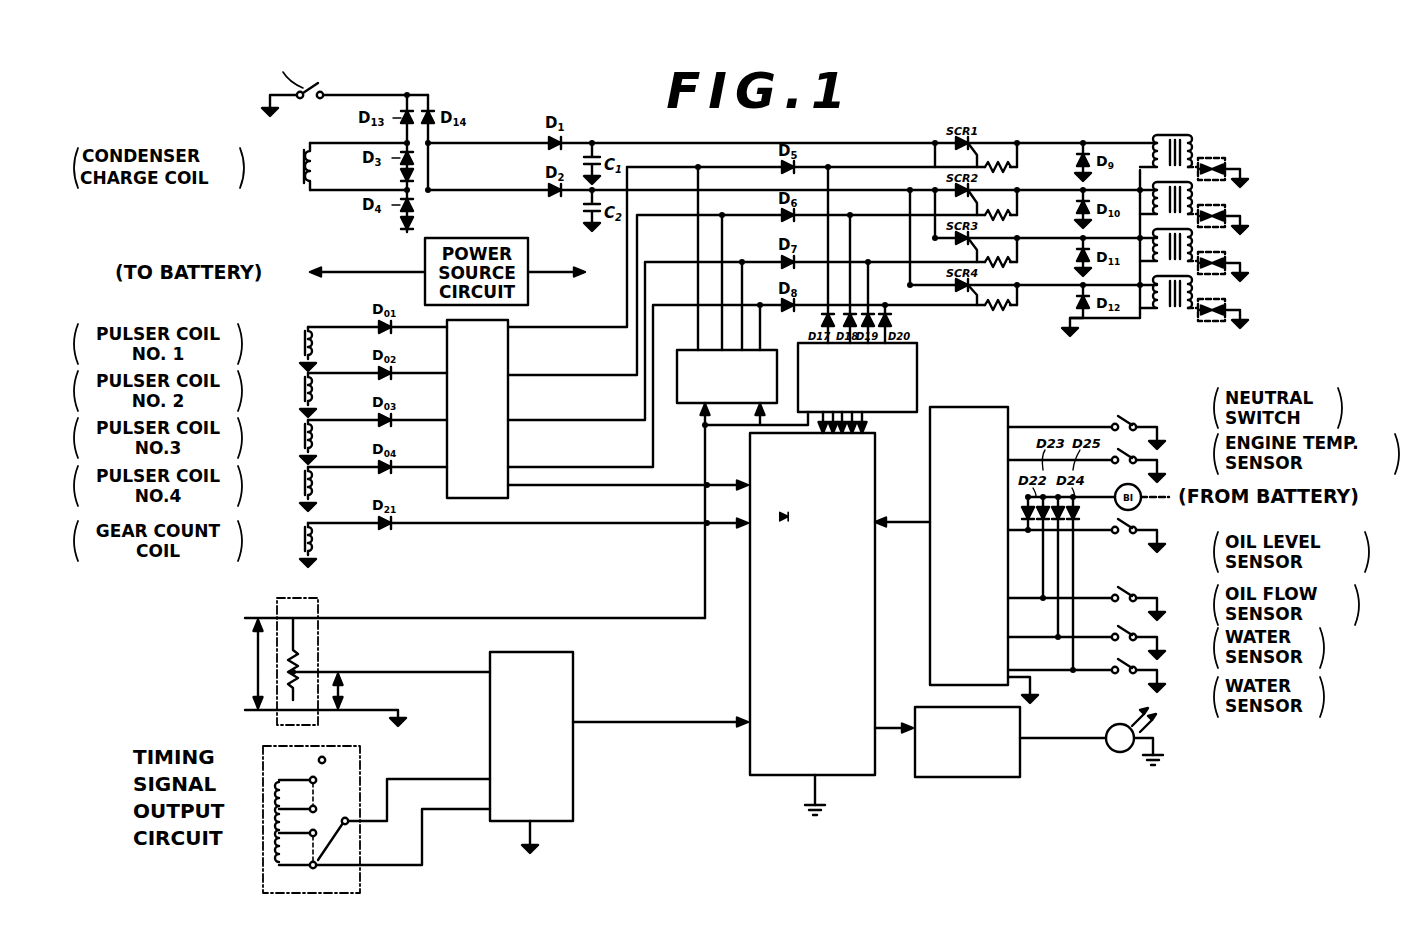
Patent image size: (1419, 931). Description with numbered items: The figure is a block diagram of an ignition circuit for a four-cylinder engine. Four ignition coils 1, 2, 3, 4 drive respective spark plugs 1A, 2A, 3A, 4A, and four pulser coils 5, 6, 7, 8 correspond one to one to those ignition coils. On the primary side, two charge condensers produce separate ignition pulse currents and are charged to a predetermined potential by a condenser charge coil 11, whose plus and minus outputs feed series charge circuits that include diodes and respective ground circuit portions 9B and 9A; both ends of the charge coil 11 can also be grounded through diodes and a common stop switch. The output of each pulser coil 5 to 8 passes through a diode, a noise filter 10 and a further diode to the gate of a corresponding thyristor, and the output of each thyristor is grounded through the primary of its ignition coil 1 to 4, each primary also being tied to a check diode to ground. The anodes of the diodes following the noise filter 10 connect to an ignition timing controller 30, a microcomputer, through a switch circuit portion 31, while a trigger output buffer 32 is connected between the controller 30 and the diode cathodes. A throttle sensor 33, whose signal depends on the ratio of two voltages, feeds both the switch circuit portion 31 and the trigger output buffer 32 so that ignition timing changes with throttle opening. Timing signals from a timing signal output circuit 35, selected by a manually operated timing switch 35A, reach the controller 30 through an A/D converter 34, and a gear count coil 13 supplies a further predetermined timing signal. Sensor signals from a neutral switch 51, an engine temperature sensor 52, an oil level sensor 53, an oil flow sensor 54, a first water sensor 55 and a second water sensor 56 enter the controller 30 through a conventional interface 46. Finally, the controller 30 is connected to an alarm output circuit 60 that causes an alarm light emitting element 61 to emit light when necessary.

The ignition coil 1 is at (1190, 152).
The spark plug 1A is at (1220, 163).
The ignition coil 2 is at (1190, 199).
The spark plug 2A is at (1220, 210).
The ignition coil 3 is at (1190, 246).
The spark plug 3A is at (1220, 257).
The ignition coil 4 is at (1190, 293).
The spark plug 4A is at (1220, 306).
The pulser coil 5 is at (300, 344).
The pulser coil 6 is at (300, 391).
The pulser coil 7 is at (300, 438).
The pulser coil 8 is at (300, 486).
The ground circuit portion 9A is at (400, 173).
The ground circuit portion 9B is at (400, 222).
The noise filter 10 is at (508, 352).
The condenser charge coil 11 is at (300, 168).
The gear count coil 13 is at (302, 541).
The ignition timing controller 30 is at (860, 777).
The switch circuit portion 31 is at (690, 405).
The trigger output buffer 32 is at (917, 356).
The throttle sensor 33 is at (318, 598).
The A/D converter 34 is at (573, 660).
The timing signal output circuit 35 is at (263, 893).
The timing switch 35A is at (350, 830).
The interface 46 is at (1008, 407).
The neutral switch 51 is at (1135, 424).
The engine temperature sensor 52 is at (1130, 452).
The oil level sensor 53 is at (1132, 524).
The oil flow sensor 54 is at (1132, 590).
The first water sensor 55 is at (1132, 630).
The second water sensor 56 is at (1132, 662).
The alarm output circuit 60 is at (970, 777).
The alarm light emitting element 61 is at (1116, 752).